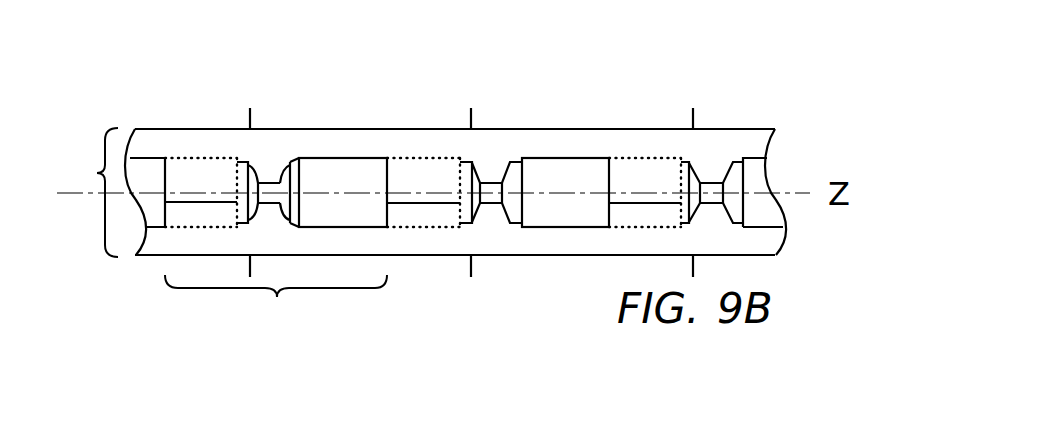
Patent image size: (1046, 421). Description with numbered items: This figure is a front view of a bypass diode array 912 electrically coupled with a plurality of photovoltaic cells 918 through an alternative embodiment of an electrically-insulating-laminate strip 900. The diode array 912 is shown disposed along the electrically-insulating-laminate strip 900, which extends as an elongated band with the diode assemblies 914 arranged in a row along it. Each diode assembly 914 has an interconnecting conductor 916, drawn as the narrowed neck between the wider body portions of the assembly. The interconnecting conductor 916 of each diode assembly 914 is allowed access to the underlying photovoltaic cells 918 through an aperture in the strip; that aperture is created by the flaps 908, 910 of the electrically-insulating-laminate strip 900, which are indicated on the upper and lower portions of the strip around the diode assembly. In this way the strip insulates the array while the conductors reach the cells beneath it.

The electrically-insulating-laminate strip 900 is at (570, 132).
The flap 908 is at (210, 170).
The flap 910 is at (457, 89).
The diode array 912 is at (97, 173).
The diode assembly 914 is at (277, 297).
The interconnecting conductor 916 is at (255, 177).
The photovoltaic cells 918 is at (667, 116).